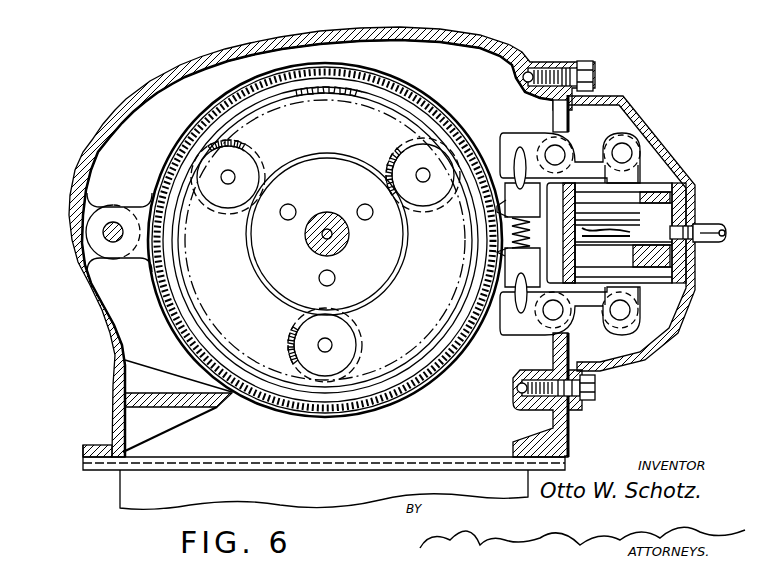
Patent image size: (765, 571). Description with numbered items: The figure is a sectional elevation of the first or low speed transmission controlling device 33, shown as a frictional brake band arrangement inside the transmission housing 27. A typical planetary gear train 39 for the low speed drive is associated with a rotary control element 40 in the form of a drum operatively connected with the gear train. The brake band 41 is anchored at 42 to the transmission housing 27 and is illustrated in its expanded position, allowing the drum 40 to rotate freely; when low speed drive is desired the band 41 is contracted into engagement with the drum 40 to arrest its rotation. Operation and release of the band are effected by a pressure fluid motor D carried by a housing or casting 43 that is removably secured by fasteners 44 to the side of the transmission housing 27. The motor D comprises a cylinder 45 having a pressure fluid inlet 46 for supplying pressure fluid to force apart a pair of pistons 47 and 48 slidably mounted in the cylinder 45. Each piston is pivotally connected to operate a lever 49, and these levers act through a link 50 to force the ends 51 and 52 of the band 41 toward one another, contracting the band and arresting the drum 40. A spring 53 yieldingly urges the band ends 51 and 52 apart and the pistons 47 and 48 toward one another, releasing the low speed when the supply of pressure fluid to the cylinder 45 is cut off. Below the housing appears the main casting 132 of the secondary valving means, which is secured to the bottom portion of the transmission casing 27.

The transmission housing 27 is at (93, 150).
The anchor 42 is at (116, 222).
The planetary gear train 39 is at (312, 152).
The speed ratio controlling device 33 is at (417, 75).
The brake band 41 is at (432, 108).
The fasteners 44 is at (545, 68).
The lever 49 is at (592, 140).
The housing or casting 43 is at (648, 106).
The pressure fluid motor D is at (655, 183).
The cylinder 45 is at (676, 194).
The pressure fluid inlet 46 is at (684, 215).
The piston 48 is at (592, 212).
The piston 47 is at (662, 267).
The link 50 is at (540, 148).
The band end 51 is at (508, 203).
The rotary control element 40 is at (508, 226).
The spring 53 is at (508, 237).
The band end 52 is at (510, 247).
The main casting 132 is at (122, 482).